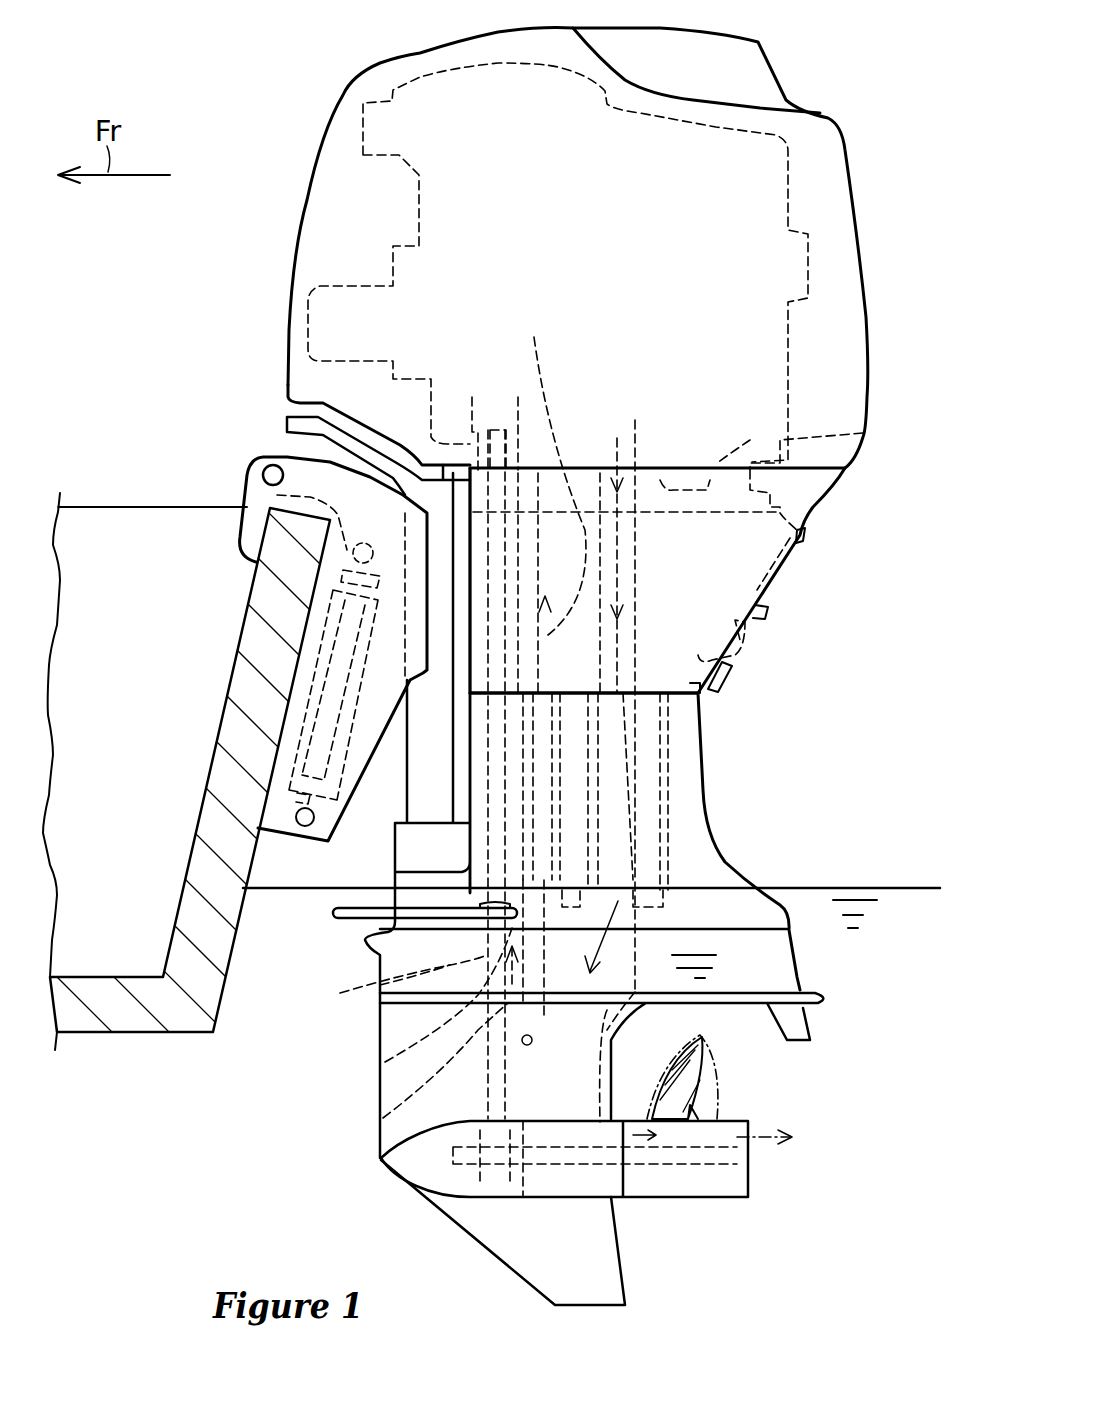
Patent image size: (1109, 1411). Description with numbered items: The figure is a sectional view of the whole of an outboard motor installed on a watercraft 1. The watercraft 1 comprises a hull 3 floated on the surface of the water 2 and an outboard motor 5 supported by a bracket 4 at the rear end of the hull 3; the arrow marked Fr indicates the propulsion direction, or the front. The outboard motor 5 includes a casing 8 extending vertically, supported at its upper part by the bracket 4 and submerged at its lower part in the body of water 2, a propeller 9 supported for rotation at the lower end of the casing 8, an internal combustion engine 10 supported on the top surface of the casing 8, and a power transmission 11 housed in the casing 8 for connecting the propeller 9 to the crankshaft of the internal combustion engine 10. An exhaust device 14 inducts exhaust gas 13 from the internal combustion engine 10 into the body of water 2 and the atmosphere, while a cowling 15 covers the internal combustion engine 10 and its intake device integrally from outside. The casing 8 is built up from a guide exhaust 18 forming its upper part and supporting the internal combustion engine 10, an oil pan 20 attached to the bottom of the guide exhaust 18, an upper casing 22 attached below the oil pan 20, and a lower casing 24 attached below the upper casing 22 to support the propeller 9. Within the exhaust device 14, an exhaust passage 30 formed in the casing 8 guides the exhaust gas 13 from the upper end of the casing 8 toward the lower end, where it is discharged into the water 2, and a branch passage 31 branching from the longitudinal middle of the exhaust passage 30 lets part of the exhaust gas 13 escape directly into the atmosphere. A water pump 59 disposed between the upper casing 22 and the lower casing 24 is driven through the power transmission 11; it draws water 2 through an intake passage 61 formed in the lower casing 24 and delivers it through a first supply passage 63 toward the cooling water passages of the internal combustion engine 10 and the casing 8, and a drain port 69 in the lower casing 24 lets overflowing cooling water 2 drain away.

The watercraft 1 is at (123, 390).
The water 2 is at (878, 890).
The hull 3 is at (99, 1013).
The bracket 4 is at (320, 695).
The outboard motor 5 is at (898, 64).
The casing 8 is at (722, 733).
The propeller 9 is at (720, 1088).
The internal combustion engine 10 is at (440, 62).
The power transmission 11 is at (400, 990).
The exhaust gas 13 is at (620, 438).
The exhaust device 14 is at (662, 572).
The cowling 15 is at (832, 205).
The guide exhaust 18 is at (863, 433).
The oil pan 20 is at (740, 643).
The upper casing 22 is at (698, 777).
The lower casing 24 is at (770, 973).
The exhaust passage 30 is at (645, 833).
The branch passage 31 is at (826, 538).
The water pump 59 is at (485, 932).
The intake passage 61 is at (380, 1118).
The first supply passage 63 is at (515, 633).
The drain port 69 is at (700, 985).